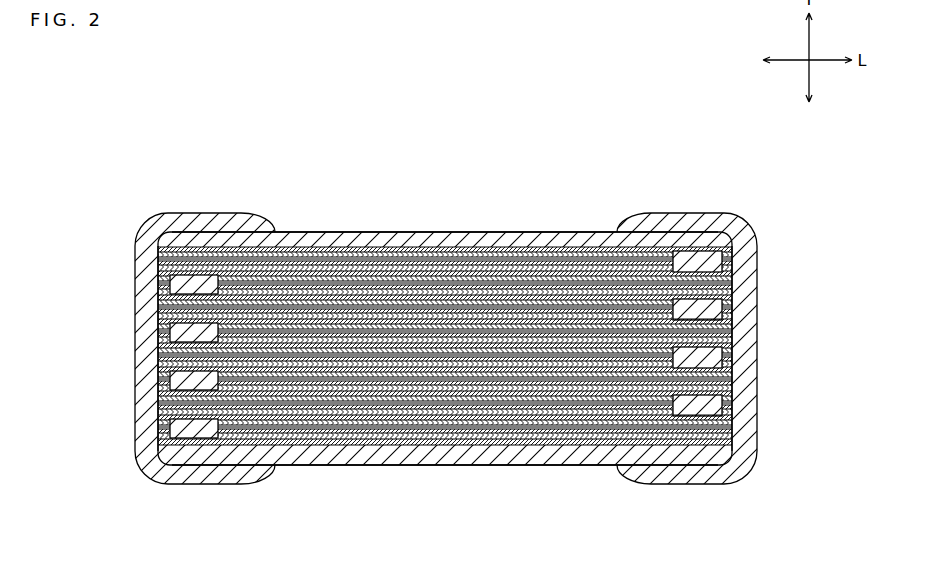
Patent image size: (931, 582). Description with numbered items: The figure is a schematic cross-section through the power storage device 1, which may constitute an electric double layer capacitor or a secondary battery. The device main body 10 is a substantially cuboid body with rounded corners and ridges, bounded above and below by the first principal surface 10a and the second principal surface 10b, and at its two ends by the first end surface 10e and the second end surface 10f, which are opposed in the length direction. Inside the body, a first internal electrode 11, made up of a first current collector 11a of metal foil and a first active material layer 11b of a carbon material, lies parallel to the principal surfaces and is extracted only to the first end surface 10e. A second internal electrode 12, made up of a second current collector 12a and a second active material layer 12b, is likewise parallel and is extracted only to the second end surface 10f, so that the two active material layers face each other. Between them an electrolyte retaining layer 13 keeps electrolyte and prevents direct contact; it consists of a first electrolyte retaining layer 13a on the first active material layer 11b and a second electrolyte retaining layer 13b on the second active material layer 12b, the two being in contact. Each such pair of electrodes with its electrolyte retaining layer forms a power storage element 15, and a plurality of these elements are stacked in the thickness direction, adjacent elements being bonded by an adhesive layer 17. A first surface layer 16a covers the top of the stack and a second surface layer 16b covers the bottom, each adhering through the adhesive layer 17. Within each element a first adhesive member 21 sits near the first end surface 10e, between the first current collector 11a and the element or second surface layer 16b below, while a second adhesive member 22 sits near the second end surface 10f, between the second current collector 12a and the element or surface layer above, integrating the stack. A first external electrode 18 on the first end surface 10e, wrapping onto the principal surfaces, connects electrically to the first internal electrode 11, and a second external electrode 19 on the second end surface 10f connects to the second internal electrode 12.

The power storage device 1 is at (447, 333).
The device main body 10 is at (449, 345).
The first principal surface 10a is at (437, 232).
The second principal surface 10b is at (555, 467).
The first end surface 10e is at (158, 340).
The second end surface 10f is at (733, 363).
The first internal electrode 11 is at (445, 195).
The first current collector 11a is at (316, 247).
The first active material layer 11b is at (352, 256).
The second internal electrode 12 is at (445, 492).
The second current collector 12a is at (395, 443).
The second active material layer 12b is at (442, 443).
The electrolyte retaining layer 13 is at (512, 418).
The first electrolyte retaining layer 13a is at (690, 410).
The second electrolyte retaining layer 13b is at (705, 428).
The power storage element 15 is at (393, 243).
The first surface layer 16a is at (523, 240).
The second surface layer 16b is at (313, 462).
The adhesive layer 17 is at (158, 395).
The first external electrode 18 is at (131, 276).
The second external electrode 19 is at (763, 280).
The first adhesive member 21 is at (158, 328).
The second adhesive member 22 is at (728, 310).